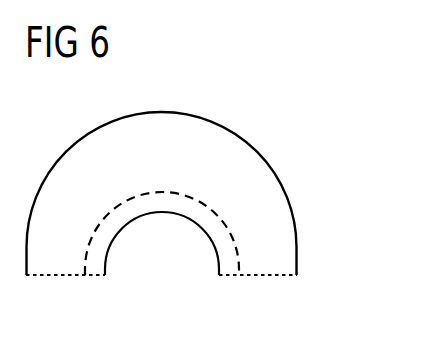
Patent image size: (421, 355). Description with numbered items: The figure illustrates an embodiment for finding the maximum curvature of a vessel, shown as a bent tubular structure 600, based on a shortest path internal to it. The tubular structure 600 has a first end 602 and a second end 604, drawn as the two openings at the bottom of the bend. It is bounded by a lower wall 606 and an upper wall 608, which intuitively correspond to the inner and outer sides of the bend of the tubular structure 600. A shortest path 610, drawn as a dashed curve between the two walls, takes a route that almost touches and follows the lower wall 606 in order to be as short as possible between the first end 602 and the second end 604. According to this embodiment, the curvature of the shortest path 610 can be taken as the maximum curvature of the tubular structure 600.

The tubular structure 600 is at (176, 91).
The first end 602 is at (73, 277).
The second end 604 is at (273, 277).
The lower wall 606 is at (156, 214).
The upper wall 608 is at (298, 247).
The shortest path 610 is at (203, 202).